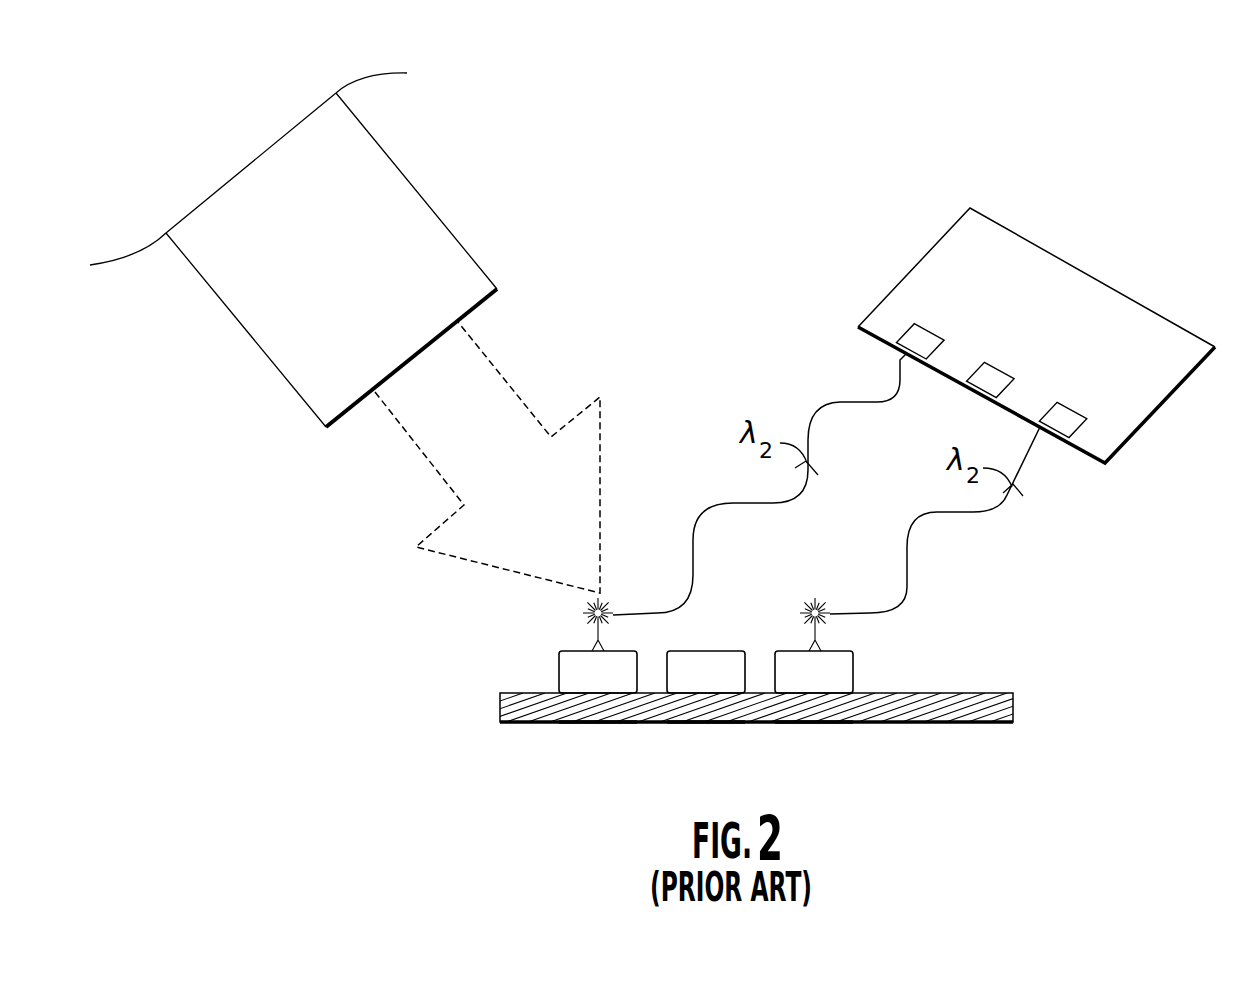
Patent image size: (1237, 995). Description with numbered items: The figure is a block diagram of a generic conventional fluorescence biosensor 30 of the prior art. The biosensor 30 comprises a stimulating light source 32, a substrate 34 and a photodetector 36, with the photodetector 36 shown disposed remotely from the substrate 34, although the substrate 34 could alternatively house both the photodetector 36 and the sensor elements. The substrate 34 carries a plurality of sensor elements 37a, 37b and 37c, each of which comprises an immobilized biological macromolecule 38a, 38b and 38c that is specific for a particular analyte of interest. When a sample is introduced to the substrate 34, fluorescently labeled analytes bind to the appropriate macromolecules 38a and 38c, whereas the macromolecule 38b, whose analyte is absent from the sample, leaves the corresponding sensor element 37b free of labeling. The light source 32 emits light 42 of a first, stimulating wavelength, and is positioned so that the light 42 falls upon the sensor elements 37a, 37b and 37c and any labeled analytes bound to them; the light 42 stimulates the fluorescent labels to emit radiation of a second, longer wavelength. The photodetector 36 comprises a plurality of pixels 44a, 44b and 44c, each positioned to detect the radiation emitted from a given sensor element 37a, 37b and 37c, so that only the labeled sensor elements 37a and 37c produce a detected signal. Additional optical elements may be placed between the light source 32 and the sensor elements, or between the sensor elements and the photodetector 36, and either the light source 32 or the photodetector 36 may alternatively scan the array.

The fluorescence biosensor 30 is at (1127, 132).
The stimulating light source 32 is at (344, 271).
The substrate 34 is at (1015, 710).
The photodetector 36 is at (1036, 335).
The sensor element 37a is at (598, 744).
The sensor element 37b is at (706, 744).
The sensor element 37c is at (814, 744).
The immobilized biological macromolecule 38a is at (598, 645).
The immobilized biological macromolecule 38b is at (706, 672).
The immobilized biological macromolecule 38c is at (814, 645).
The light 42 is at (503, 395).
The pixel 44a is at (932, 337).
The pixel 44b is at (1003, 372).
The pixel 44c is at (1075, 413).